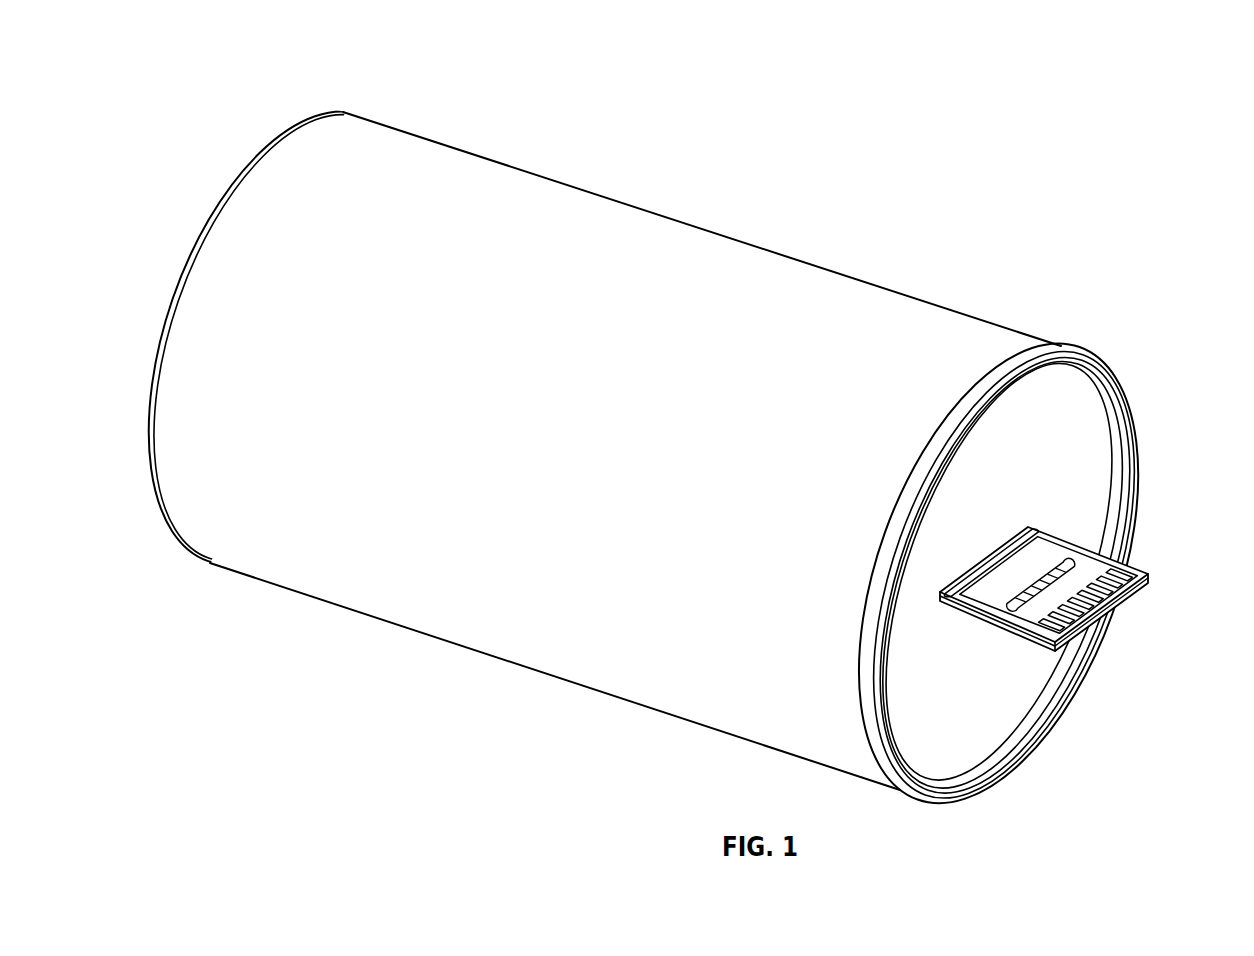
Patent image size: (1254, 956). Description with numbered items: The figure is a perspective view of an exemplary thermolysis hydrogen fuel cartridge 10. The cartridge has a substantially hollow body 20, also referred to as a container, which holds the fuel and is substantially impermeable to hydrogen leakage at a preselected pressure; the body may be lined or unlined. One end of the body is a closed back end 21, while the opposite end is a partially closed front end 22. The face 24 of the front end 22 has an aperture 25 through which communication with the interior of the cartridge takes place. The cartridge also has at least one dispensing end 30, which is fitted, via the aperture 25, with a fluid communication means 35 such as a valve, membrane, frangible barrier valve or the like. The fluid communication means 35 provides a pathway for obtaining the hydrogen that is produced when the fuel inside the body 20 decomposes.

The hydrogen fuel cartridge 10 is at (213, 82).
The hollow body 20 is at (823, 395).
The closed back end 21 is at (198, 223).
The partially closed front end 22 is at (1150, 428).
The face 24 is at (1003, 482).
The aperture 25 is at (952, 592).
The dispensing end 30 is at (1147, 578).
The fluid communication means 35 is at (1138, 607).